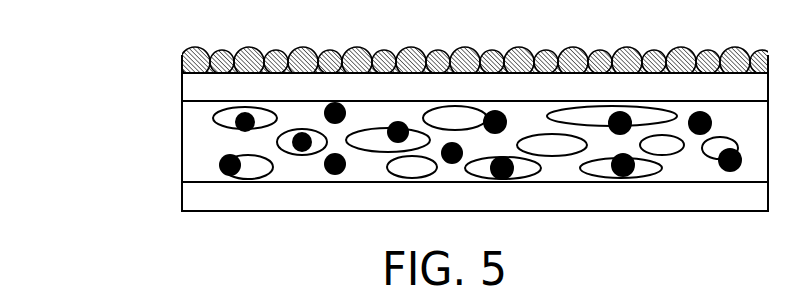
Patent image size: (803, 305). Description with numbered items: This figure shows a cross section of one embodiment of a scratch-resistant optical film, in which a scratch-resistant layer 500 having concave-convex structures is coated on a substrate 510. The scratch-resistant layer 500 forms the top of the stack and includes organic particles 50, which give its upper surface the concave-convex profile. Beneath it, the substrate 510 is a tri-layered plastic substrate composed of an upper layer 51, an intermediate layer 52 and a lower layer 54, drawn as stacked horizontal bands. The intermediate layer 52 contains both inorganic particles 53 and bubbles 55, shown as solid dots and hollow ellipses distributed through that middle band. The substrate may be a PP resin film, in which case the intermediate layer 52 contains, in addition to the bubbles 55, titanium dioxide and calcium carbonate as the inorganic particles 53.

The scratch-resistant layer 500 is at (95, 48).
The substrate 510 is at (95, 212).
The organic particles 50 is at (183, 57).
The layer 51 is at (191, 86).
The intermediate layer 52 is at (191, 138).
The inorganic particles 53 is at (219, 175).
The layer 54 is at (191, 193).
The bubbles 55 is at (271, 171).